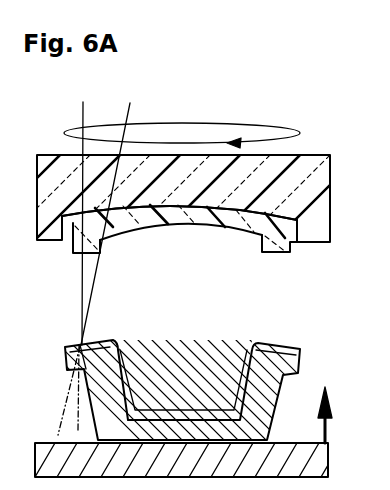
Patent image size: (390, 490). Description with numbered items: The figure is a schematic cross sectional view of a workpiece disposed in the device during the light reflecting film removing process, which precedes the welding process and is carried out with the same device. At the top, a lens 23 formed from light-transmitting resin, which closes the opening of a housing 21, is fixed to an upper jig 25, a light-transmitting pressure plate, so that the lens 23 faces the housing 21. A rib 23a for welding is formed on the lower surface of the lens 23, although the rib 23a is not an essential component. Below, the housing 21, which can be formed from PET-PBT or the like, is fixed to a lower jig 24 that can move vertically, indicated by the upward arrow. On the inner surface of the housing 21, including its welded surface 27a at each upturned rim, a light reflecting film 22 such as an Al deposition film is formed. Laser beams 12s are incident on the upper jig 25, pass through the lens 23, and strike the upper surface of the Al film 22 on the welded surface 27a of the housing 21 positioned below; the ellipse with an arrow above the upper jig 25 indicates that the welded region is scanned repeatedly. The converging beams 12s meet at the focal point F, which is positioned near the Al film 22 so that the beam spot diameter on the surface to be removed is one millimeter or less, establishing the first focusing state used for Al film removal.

The laser beams 12s is at (130, 110).
The upper jig (light-transmitting pressure plate) 25 is at (331, 190).
The lens 23 is at (200, 229).
The rib 23a is at (273, 253).
The housing 21 is at (278, 405).
The light reflecting film 22 is at (126, 400).
The welded surface 27a is at (99, 339).
The lower jig 24 is at (330, 467).
The focal point F is at (78, 343).